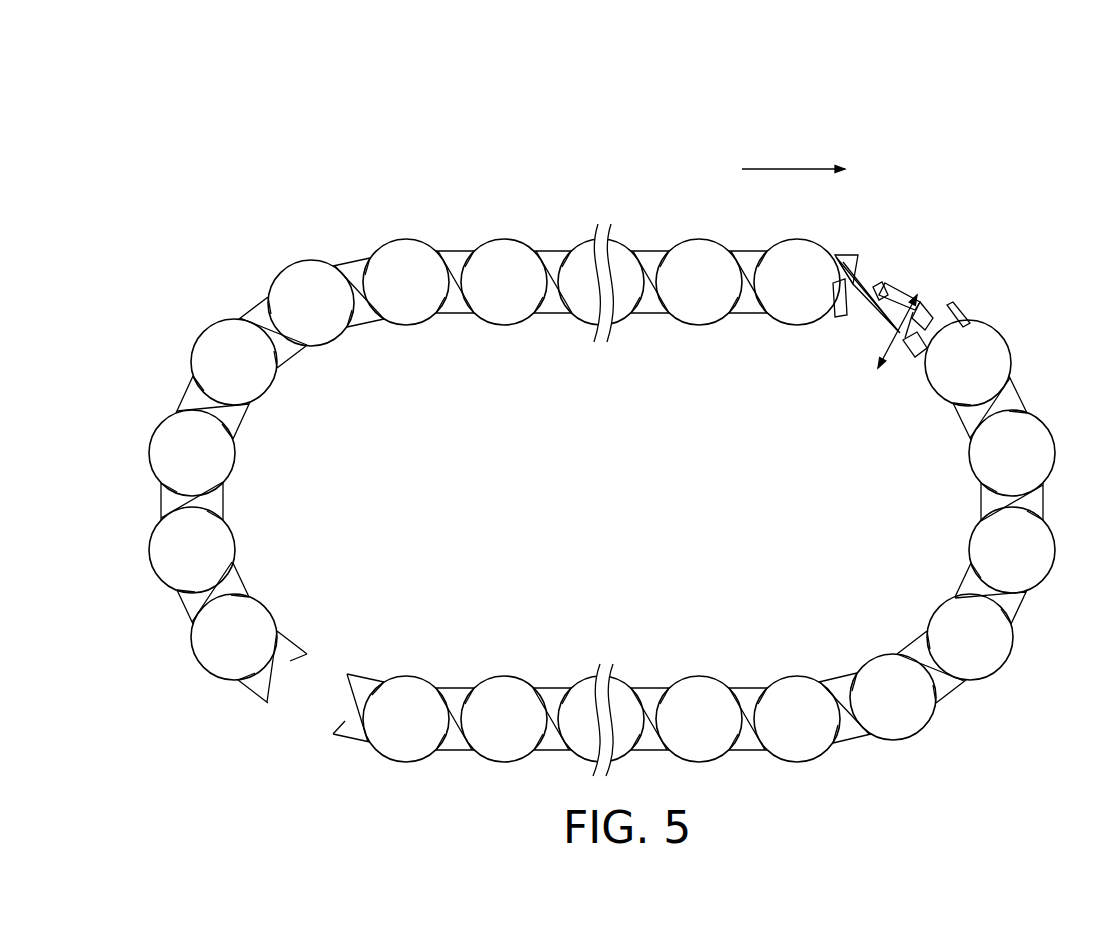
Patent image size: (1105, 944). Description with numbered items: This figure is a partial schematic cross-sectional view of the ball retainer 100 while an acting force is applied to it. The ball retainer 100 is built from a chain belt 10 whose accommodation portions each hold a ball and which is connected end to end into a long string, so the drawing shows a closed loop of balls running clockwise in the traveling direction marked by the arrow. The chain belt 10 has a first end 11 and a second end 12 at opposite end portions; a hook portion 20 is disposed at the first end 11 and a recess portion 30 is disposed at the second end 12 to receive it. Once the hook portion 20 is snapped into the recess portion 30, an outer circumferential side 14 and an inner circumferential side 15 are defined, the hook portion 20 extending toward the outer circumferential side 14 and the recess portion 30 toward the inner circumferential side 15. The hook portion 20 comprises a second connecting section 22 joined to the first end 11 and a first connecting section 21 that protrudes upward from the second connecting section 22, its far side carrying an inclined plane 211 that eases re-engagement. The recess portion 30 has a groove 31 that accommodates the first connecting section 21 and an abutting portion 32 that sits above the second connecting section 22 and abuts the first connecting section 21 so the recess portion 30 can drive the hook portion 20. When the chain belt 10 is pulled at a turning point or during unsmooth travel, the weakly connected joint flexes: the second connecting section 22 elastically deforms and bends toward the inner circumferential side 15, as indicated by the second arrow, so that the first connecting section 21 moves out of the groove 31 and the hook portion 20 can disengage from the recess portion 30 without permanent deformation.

The ball retainer 100 is at (187, 133).
The chain belt 10 is at (452, 250).
The first end 11 is at (839, 258).
The second end 12 is at (950, 305).
The outer circumferential side 14 is at (323, 247).
The inner circumferential side 15 is at (362, 345).
The hook portion 20 is at (870, 396).
The first connecting section 21 is at (888, 312).
The inclined plane 211 is at (905, 340).
The second connecting section 22 is at (856, 296).
The recess portion 30 is at (884, 285).
The groove 31 is at (920, 300).
The abutting portion 32 is at (880, 283).